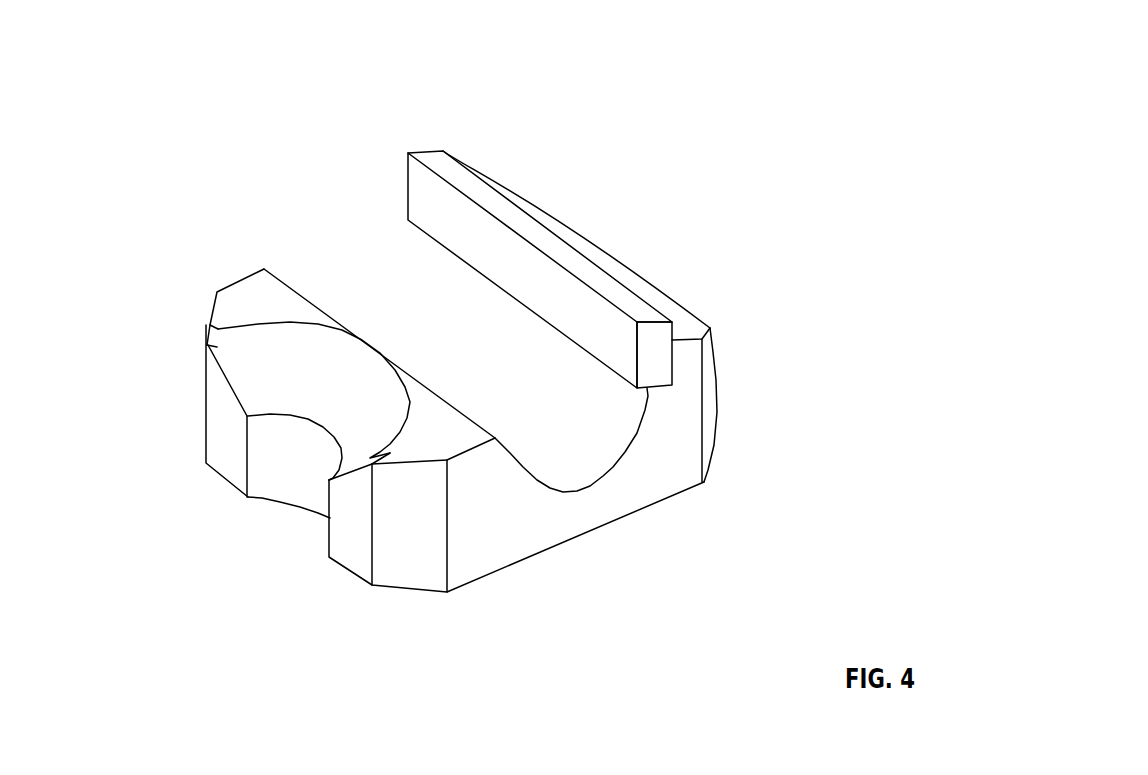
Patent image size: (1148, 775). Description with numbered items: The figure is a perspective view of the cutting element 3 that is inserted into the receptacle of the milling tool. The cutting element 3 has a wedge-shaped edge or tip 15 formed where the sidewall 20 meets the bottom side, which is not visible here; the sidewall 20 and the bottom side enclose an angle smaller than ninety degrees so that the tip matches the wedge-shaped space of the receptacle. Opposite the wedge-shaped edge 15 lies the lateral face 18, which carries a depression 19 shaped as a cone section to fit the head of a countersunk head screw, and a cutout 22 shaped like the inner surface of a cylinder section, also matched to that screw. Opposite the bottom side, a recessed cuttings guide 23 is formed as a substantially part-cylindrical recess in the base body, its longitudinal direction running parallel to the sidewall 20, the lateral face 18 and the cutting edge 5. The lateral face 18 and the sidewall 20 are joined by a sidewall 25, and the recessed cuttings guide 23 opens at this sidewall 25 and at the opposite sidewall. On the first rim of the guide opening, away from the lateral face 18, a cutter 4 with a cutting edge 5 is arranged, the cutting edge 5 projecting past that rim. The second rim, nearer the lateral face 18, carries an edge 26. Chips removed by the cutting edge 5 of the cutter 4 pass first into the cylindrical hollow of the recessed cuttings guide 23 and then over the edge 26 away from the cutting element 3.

The cutting element 3 is at (690, 210).
The cutter 4 is at (427, 200).
The cutting edge 5 is at (435, 172).
The wedge-shaped edge or tip 15 is at (717, 412).
The lateral face 18 is at (223, 434).
The depression 19 is at (350, 376).
The sidewall 20 is at (713, 352).
The cutout 22 is at (290, 478).
The recessed cuttings guide 23 is at (432, 340).
The sidewall 25 is at (522, 525).
The edge 26 is at (448, 403).